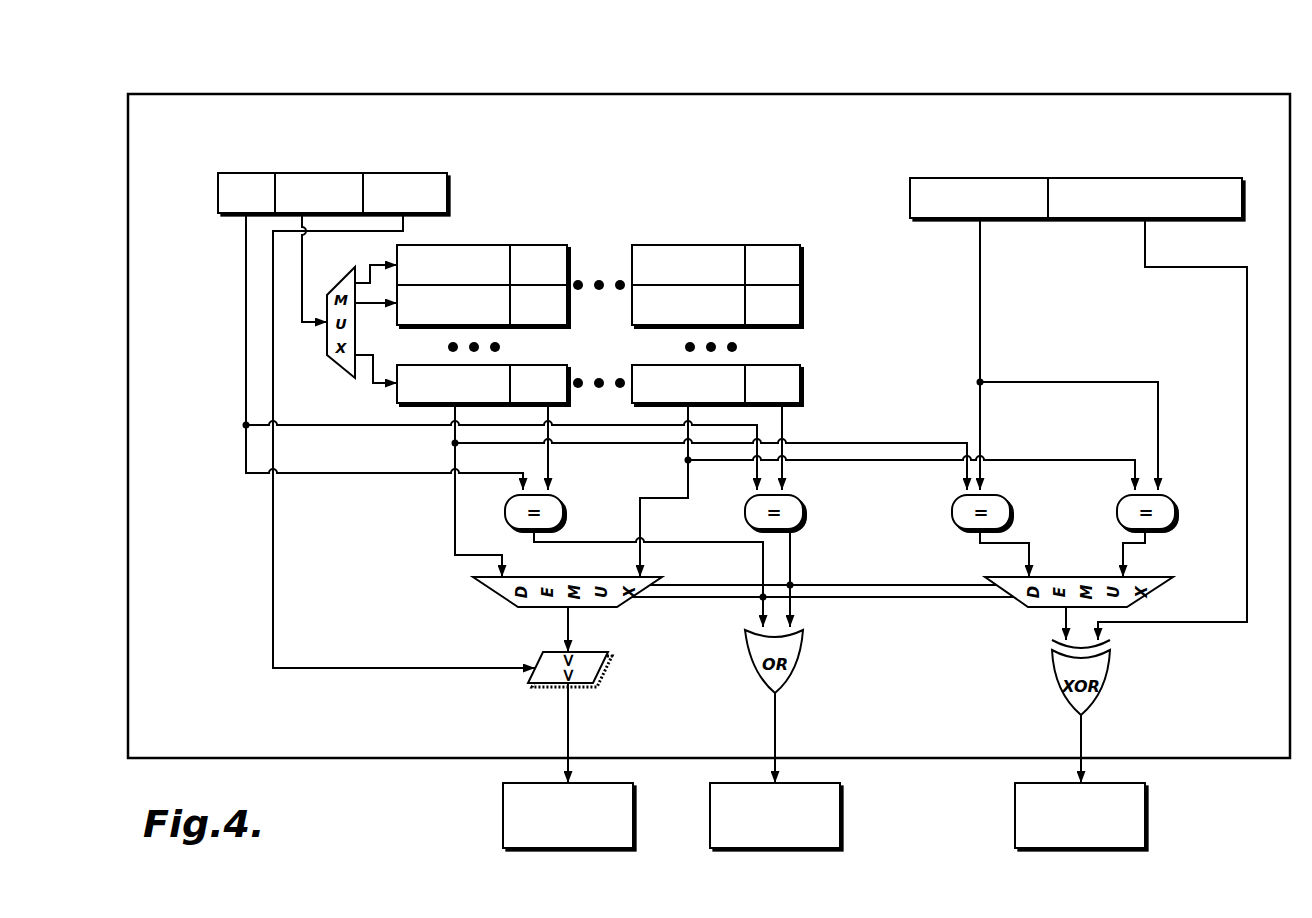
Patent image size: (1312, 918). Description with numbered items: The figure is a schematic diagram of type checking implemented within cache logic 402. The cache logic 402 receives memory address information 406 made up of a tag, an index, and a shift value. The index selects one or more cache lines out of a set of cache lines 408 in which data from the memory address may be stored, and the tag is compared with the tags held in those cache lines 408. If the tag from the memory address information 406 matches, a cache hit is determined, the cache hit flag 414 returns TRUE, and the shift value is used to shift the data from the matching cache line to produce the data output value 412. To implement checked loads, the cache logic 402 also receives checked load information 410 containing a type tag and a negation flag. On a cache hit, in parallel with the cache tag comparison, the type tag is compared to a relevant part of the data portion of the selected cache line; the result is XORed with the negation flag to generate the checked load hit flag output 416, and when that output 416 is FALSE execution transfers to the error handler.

The cache logic 402 is at (177, 94).
The memory address information 406 is at (222, 173).
The set of cache lines 408 is at (600, 230).
The checked load information 410 is at (912, 178).
The data output value 412 is at (503, 820).
The cache hit flag 414 is at (843, 826).
The checked load hit flag output 416 is at (1150, 800).